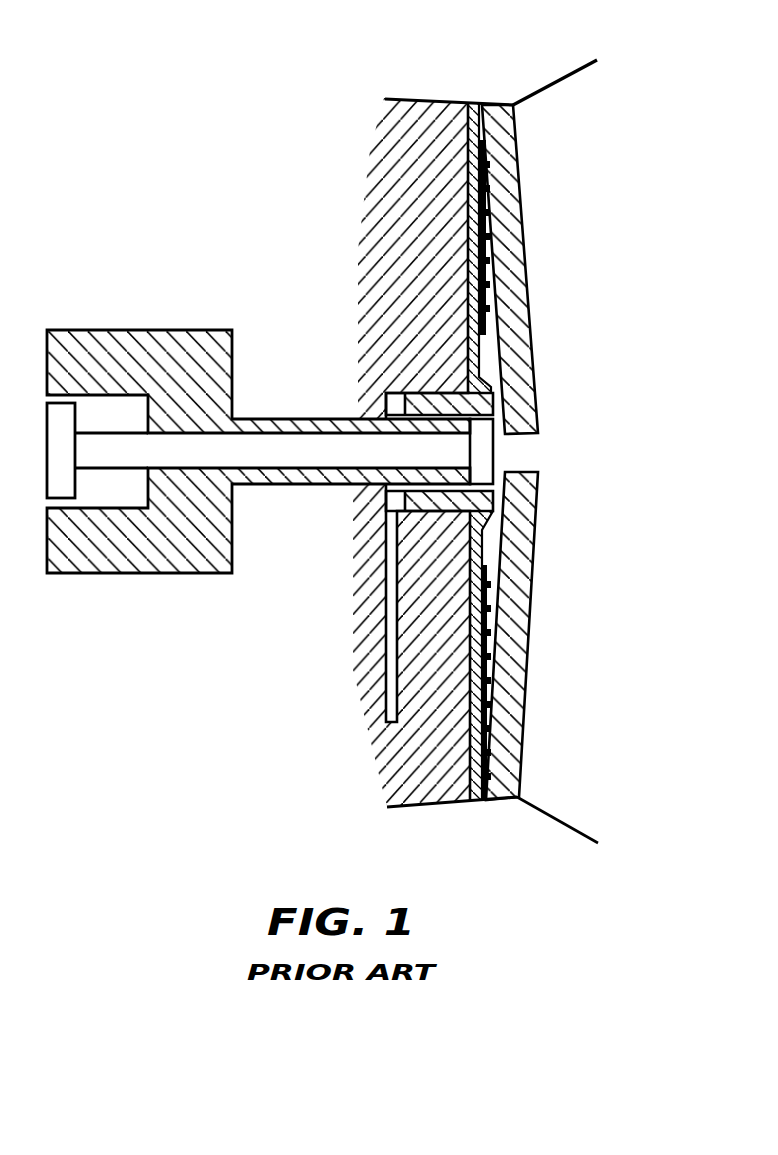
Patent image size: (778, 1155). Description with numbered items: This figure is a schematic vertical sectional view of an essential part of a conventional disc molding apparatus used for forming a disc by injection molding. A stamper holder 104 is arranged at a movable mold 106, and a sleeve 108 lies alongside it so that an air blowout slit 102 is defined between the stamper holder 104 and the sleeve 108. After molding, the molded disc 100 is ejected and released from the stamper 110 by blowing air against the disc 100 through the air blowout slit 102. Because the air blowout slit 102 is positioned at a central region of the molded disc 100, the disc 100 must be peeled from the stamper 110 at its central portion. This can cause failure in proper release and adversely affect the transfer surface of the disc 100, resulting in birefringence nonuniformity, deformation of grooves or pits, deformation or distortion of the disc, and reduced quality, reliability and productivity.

The molded disc 100 is at (530, 308).
The air blowout slit 102 is at (493, 435).
The stamper holder 104 is at (417, 393).
The movable mold 106 is at (430, 115).
The sleeve 108 is at (402, 427).
The stamper 110 is at (473, 245).